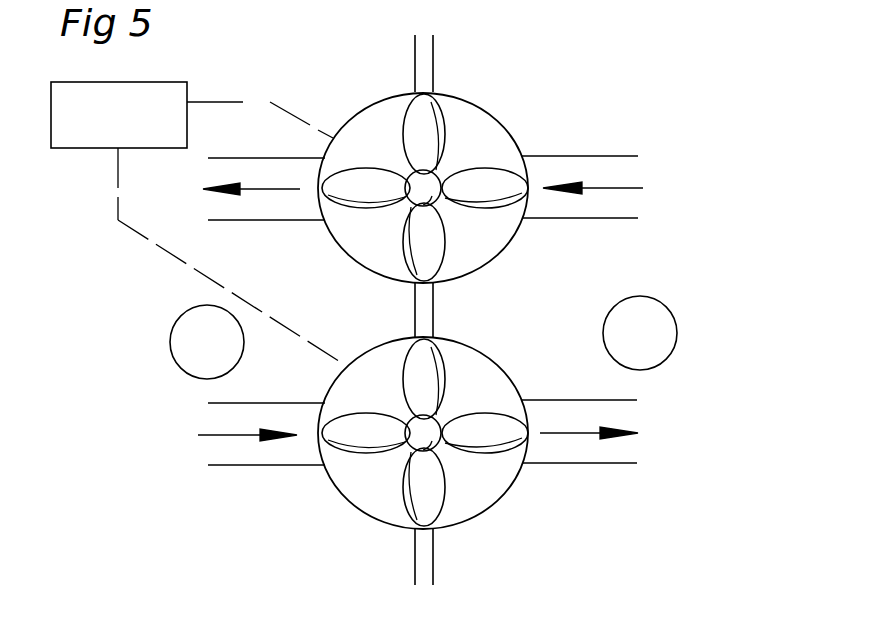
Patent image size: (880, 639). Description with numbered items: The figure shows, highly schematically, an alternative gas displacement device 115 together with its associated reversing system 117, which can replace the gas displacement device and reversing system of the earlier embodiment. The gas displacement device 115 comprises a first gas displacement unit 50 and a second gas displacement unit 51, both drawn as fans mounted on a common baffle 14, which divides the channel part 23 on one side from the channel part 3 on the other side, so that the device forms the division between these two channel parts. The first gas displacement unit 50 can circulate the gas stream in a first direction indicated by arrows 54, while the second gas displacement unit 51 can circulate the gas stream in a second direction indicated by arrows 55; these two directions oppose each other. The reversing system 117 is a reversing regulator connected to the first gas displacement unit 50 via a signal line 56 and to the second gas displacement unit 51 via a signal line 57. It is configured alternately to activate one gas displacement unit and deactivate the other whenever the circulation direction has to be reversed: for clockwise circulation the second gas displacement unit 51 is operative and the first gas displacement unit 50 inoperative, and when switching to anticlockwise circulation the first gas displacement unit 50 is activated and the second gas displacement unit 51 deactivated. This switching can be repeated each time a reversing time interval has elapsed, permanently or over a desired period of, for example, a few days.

The channel part 3 is at (640, 333).
The baffle 14 is at (422, 55).
The channel part 23 is at (207, 342).
The first gas displacement unit 50 is at (487, 110).
The second gas displacement unit 51 is at (480, 353).
The arrows 54 is at (258, 188).
The arrows 55 is at (244, 437).
The signal line 56 is at (243, 102).
The signal line 57 is at (118, 188).
The gas displacement device 115 is at (662, 138).
The reversing system 117 is at (132, 126).